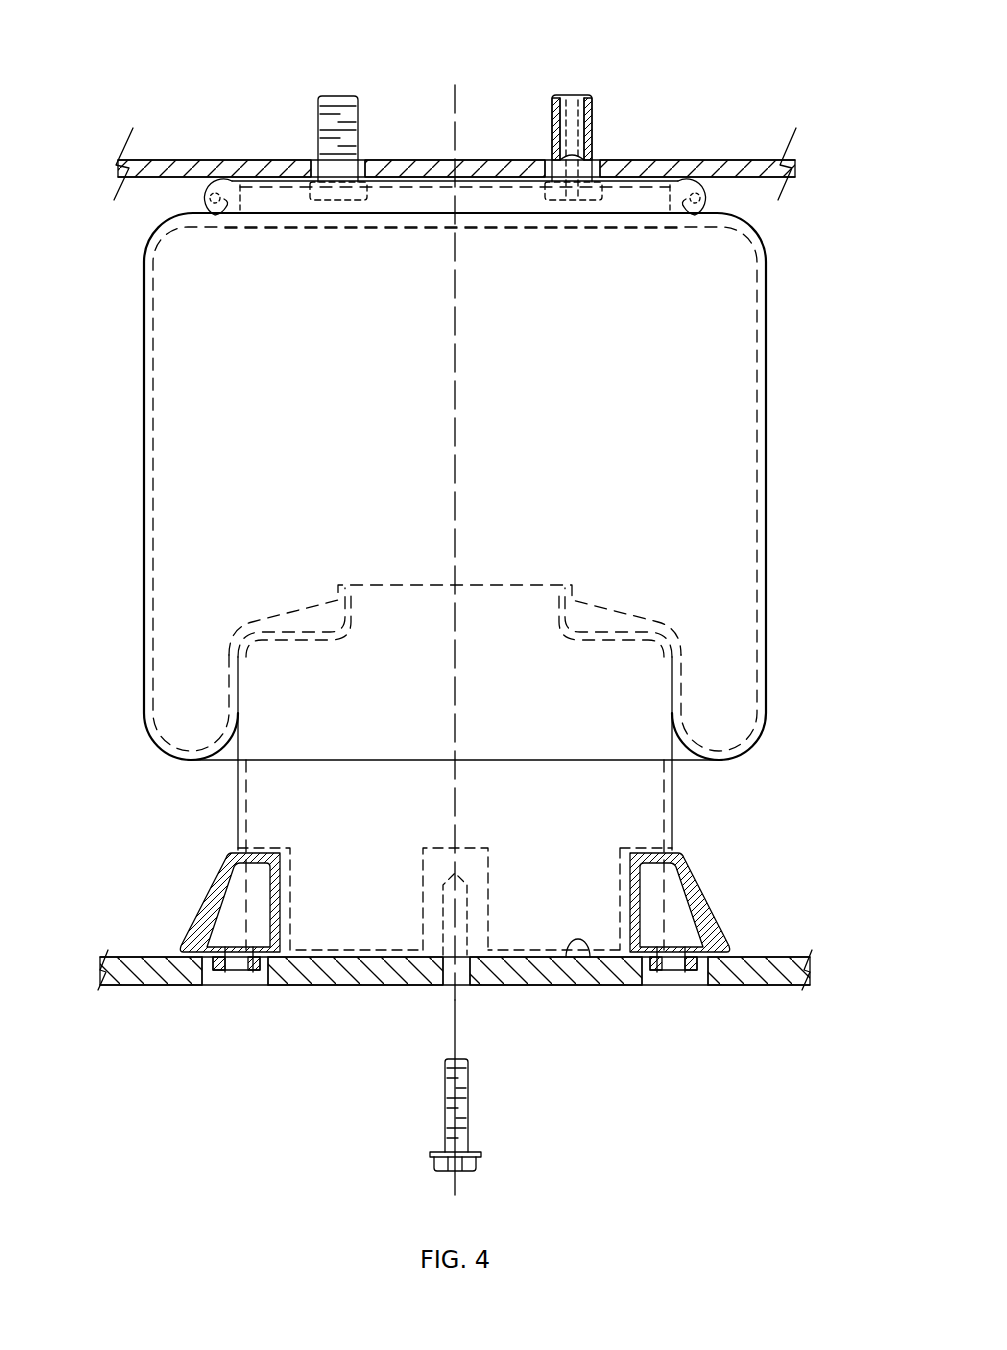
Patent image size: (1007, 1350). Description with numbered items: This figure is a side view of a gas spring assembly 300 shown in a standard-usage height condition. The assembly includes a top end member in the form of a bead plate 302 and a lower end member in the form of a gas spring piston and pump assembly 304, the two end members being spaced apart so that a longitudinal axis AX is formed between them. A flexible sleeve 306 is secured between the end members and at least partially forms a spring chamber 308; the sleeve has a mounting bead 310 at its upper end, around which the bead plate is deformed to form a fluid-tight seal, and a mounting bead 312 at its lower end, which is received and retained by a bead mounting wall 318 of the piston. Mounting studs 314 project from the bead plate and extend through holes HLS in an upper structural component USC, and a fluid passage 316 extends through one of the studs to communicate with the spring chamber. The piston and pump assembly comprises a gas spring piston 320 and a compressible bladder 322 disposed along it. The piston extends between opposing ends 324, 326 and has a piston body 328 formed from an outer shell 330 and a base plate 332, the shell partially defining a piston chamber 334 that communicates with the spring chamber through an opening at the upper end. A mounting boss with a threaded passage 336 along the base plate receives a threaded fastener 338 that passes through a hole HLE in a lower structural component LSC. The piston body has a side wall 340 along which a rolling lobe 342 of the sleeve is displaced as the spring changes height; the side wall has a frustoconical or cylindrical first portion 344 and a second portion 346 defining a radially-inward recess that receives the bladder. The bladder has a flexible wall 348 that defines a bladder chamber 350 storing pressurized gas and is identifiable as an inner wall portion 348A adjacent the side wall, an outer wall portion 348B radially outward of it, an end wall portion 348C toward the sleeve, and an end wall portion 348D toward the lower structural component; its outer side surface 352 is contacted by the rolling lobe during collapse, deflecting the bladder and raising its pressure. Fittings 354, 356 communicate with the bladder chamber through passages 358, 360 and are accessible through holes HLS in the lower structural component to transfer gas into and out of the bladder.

The gas spring assembly 300 is at (800, 305).
The bead plate 302 is at (262, 163).
The gas spring piston and pump assembly 304 is at (165, 835).
The flexible sleeve 306 is at (772, 490).
The spring chamber 308 is at (228, 435).
The mounting bead 310 is at (668, 214).
The mounting bead 312 is at (598, 617).
The mounting studs 314 is at (352, 110).
The fluid passage 316 is at (571, 98).
The bead mounting wall 318 is at (570, 610).
The gas spring piston 320 is at (360, 895).
The compressible bladder 322 is at (706, 860).
The end 324 is at (234, 655).
The end 326 is at (152, 940).
The piston body 328 is at (522, 907).
The outer shell 330 is at (674, 797).
The base plate 332 is at (578, 945).
The piston chamber 334 is at (392, 673).
The threaded passage 336 is at (488, 893).
The threaded fastener 338 is at (468, 1097).
The side wall 340 is at (234, 790).
The rolling lobe 342 is at (190, 760).
The first portion 344 is at (238, 800).
The second portion 346 is at (293, 912).
The flexible wall 348 is at (203, 922).
The inner wall portion 348A is at (633, 895).
The outer wall portion 348B is at (706, 920).
The end wall portion 348C is at (655, 852).
The end wall portion 348D is at (283, 950).
The bladder chamber 350 is at (244, 912).
The outer side surface 352 is at (700, 893).
The fitting 354 is at (217, 972).
The fitting 356 is at (692, 972).
The passage 358 is at (239, 966).
The passage 360 is at (670, 966).
The longitudinal axis AX is at (465, 302).
The upper structural component USC is at (676, 160).
The lower structural component LSC is at (118, 986).
The holes HLS is at (368, 163).
The hole HLE is at (420, 985).